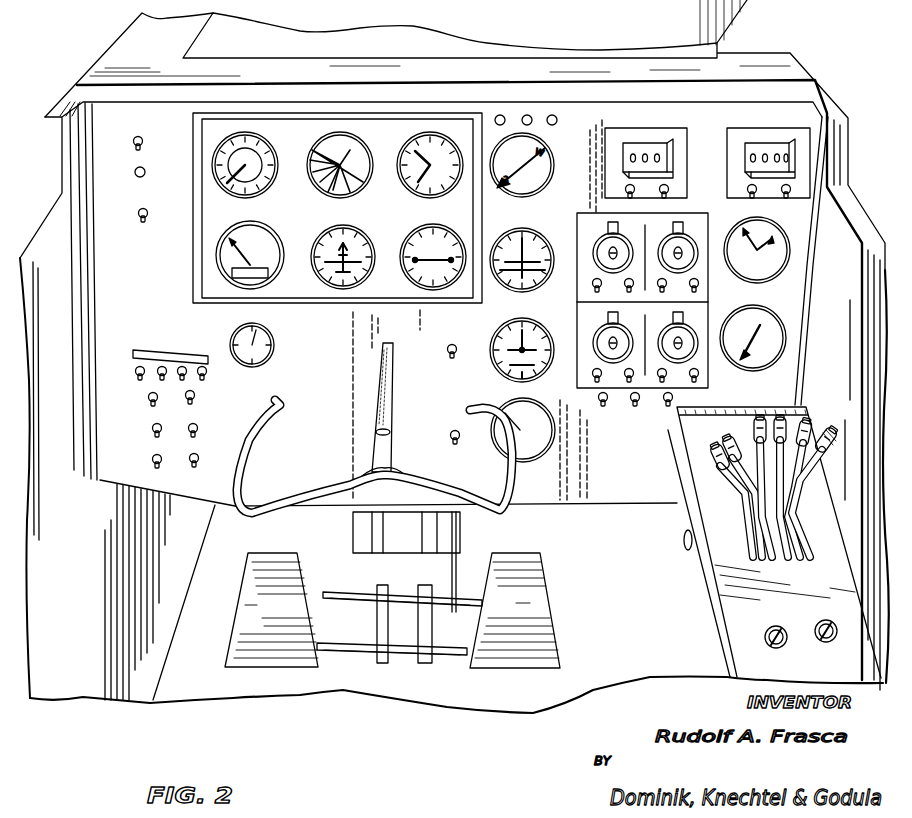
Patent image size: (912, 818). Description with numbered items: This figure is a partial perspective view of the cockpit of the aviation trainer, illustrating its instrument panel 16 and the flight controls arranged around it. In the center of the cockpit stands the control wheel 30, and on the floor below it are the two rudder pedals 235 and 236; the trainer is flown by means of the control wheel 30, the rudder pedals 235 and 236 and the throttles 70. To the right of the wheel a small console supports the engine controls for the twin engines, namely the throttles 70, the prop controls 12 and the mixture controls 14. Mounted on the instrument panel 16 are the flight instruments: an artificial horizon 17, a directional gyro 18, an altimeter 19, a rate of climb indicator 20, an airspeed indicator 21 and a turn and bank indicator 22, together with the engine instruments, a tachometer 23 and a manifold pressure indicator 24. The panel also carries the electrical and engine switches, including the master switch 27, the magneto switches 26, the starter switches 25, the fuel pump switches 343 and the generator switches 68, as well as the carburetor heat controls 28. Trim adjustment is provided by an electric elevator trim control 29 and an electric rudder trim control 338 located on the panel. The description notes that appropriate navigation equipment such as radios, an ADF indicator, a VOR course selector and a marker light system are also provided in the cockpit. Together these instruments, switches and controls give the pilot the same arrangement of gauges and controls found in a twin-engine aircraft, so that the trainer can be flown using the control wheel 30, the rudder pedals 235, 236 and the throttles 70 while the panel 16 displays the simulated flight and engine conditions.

The prop controls 12 is at (762, 418).
The mixture controls 14 is at (832, 425).
The instrument panel 16 is at (568, 118).
The artificial horizon 17 is at (361, 144).
The directional gyro 18 is at (312, 228).
The altimeter 19 is at (441, 133).
The rate of climb indicator 20 is at (410, 225).
The airspeed indicator 21 is at (268, 143).
The turn and bank indicator 22 is at (238, 225).
The tachometer 23 is at (773, 340).
The manifold pressure indicator 24 is at (773, 270).
The starter switches 25 is at (140, 398).
The magneto switches 26 is at (130, 368).
The master switch 27 is at (137, 132).
The carburetor heat controls 28 is at (830, 620).
The electric elevator trim control 29 is at (448, 342).
The control wheel 30 is at (250, 457).
The generator switches 68 is at (140, 460).
The throttles 70 is at (727, 445).
The rudder pedal 235 is at (245, 603).
The rudder pedal 236 is at (540, 610).
The electric rudder trim control 338 is at (450, 438).
The fuel pump switches 343 is at (143, 429).